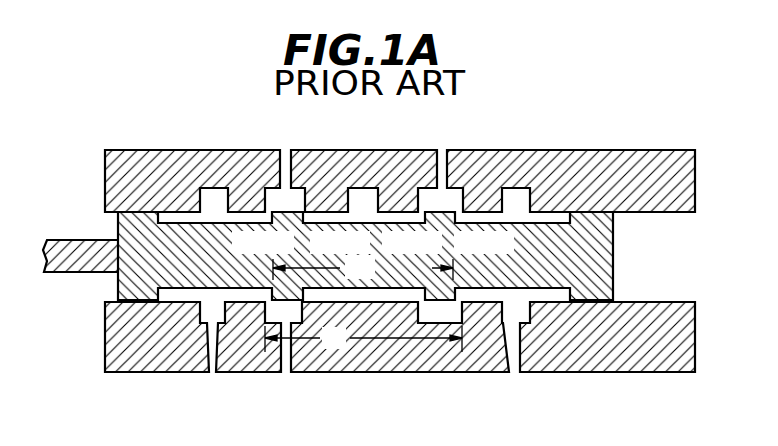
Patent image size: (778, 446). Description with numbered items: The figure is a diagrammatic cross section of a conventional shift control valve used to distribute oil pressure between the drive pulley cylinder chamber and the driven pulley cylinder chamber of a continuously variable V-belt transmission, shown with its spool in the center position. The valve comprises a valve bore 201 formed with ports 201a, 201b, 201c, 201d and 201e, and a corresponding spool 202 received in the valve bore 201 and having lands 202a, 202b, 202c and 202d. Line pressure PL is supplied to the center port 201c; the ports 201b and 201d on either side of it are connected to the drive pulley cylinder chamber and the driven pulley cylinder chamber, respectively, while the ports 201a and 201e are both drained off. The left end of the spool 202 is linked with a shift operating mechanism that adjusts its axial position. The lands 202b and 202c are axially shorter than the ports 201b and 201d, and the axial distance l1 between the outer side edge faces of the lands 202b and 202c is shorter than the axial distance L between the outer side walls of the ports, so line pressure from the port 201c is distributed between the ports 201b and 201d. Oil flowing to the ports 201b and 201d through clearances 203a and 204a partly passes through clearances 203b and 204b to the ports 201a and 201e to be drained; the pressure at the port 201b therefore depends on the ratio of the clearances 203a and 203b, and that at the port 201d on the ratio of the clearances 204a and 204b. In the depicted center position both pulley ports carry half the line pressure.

The valve bore 201 is at (400, 156).
The port 201a is at (215, 193).
The port 201b is at (308, 192).
The center port 201c is at (372, 196).
The port 201d is at (465, 190).
The port 201e is at (520, 190).
The spool 202 is at (400, 344).
The land 202a is at (145, 303).
The land 202b is at (258, 328).
The land 202c is at (438, 292).
The land 202d is at (584, 293).
The clearance 203a is at (328, 256).
The clearance 203b is at (328, 256).
The clearance 204a is at (328, 256).
The clearance 204b is at (459, 215).
The axial distance between outer side edge faces of lands l1 is at (363, 269).
The axial distance between outer side walls of ports L is at (363, 339).
The line pressure PL is at (380, 390).